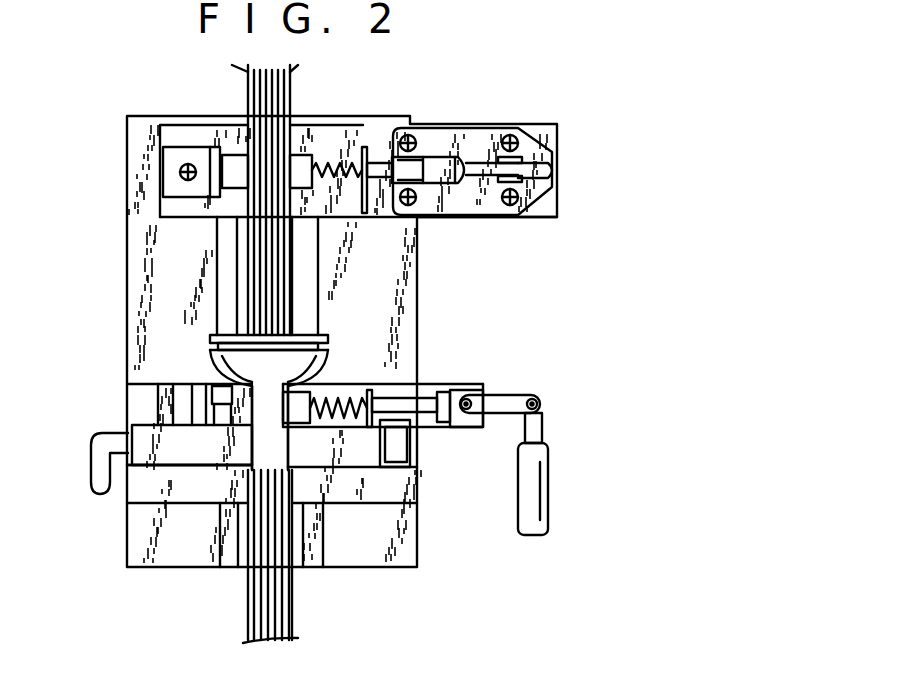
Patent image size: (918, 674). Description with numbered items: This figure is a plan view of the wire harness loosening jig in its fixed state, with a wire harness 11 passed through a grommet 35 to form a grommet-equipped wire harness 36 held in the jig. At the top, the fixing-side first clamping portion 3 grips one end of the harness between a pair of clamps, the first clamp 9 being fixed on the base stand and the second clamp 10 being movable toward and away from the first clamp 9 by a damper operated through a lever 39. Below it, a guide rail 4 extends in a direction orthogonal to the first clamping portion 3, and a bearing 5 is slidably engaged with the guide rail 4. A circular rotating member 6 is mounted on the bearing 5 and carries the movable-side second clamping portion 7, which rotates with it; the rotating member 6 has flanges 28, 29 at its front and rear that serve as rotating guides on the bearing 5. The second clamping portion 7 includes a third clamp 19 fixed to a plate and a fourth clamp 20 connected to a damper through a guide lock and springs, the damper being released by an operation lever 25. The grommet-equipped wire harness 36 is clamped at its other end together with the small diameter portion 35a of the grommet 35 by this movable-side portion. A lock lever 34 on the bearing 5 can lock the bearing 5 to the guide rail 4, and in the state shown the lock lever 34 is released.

The first clamping portion 3 is at (331, 145).
The guide rail 4 is at (323, 552).
The bearing 5 is at (150, 469).
The rotating member 6 is at (383, 458).
The second clamping portion 7 is at (435, 437).
The first clamp 9 is at (233, 150).
The second clamp 10 is at (295, 152).
The wire harness 11 is at (247, 285).
The third clamp 19 is at (172, 391).
The fourth clamp 20 is at (312, 388).
The operation lever 25 is at (546, 536).
The flange 28 is at (150, 416).
The flange 29 is at (164, 477).
The lock lever 34 is at (83, 467).
The grommet 35 is at (208, 328).
The small diameter portion 35a is at (278, 387).
The grommet-equipped wire harness 36 is at (70, 212).
The lever 39 is at (556, 172).